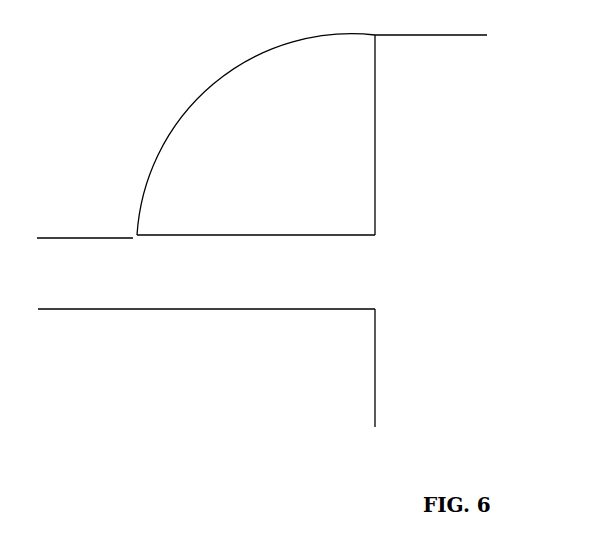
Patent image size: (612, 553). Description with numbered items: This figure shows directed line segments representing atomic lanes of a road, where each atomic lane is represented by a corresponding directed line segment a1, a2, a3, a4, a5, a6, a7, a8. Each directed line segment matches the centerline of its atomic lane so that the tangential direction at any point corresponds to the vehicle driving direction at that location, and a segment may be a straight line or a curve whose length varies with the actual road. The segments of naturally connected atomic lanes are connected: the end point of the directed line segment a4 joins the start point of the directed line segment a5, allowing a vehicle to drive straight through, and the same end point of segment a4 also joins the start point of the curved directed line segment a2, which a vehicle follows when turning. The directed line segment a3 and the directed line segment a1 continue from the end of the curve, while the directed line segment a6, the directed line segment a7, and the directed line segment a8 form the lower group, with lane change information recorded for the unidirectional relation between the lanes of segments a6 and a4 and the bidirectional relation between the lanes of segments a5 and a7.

The directed line segment a1 is at (431, 47).
The directed line segment a2 is at (256, 134).
The directed line segment a3 is at (388, 135).
The directed line segment a4 is at (85, 227).
The directed line segment a5 is at (256, 224).
The directed line segment a6 is at (119, 321).
The directed line segment a7 is at (287, 320).
The directed line segment a8 is at (388, 368).